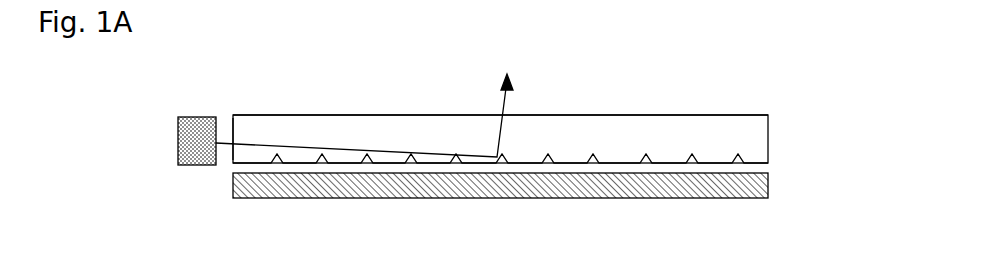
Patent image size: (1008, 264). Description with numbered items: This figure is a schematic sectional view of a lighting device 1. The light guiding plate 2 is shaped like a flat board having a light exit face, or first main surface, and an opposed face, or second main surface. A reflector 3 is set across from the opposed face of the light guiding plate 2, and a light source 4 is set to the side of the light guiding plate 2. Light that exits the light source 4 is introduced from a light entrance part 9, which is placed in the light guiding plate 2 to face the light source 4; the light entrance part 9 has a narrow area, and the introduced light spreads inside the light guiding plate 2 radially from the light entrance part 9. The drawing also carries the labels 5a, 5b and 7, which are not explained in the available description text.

The lighting device 1 is at (331, 70).
The light guiding plate 2 is at (768, 137).
The reflector 3 is at (768, 177).
The light source 4 is at (188, 166).
The prism / protrusion on bottom surface 5a is at (646, 156).
The top light-emitting surface 5b is at (716, 115).
The emitted light ray 7 is at (505, 100).
The light entrance part 9 is at (233, 122).